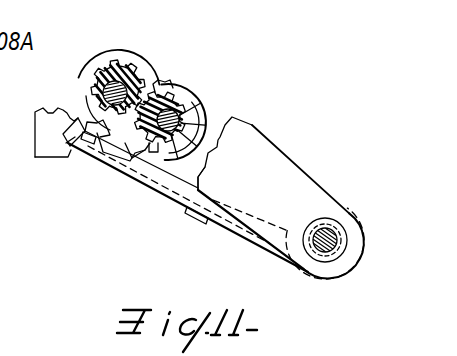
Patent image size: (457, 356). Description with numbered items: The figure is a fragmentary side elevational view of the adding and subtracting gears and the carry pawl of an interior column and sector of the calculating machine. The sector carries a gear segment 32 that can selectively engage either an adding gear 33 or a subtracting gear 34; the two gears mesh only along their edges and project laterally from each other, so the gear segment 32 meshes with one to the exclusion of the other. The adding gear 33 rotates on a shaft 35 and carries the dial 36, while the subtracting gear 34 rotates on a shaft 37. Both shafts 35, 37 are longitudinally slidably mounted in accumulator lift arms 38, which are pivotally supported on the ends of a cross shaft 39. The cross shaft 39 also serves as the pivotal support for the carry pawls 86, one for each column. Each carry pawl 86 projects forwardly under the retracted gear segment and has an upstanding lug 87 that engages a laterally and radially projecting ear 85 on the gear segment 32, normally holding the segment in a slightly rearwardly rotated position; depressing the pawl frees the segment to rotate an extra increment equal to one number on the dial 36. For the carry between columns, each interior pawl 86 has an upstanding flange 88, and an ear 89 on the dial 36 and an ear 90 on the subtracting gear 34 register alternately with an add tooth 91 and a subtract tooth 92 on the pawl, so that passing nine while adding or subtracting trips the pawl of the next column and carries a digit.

The gear segment 32 is at (43, 147).
The adding gear 33 is at (130, 78).
The subtracting gear 34 is at (188, 108).
The shaft 35 is at (110, 63).
The dial 36 is at (119, 56).
The shaft 37 is at (183, 107).
The accumulator lift arm 38 is at (270, 143).
The cross shaft 39 is at (324, 229).
The ear 85 is at (93, 148).
The carry pawl 86 is at (167, 190).
The upstanding lug 87 is at (79, 142).
The upstanding flange 88 is at (148, 178).
The ear 89 is at (93, 112).
The ear 90 is at (210, 116).
The add tooth 91 is at (70, 123).
The subtract tooth 92 is at (198, 178).